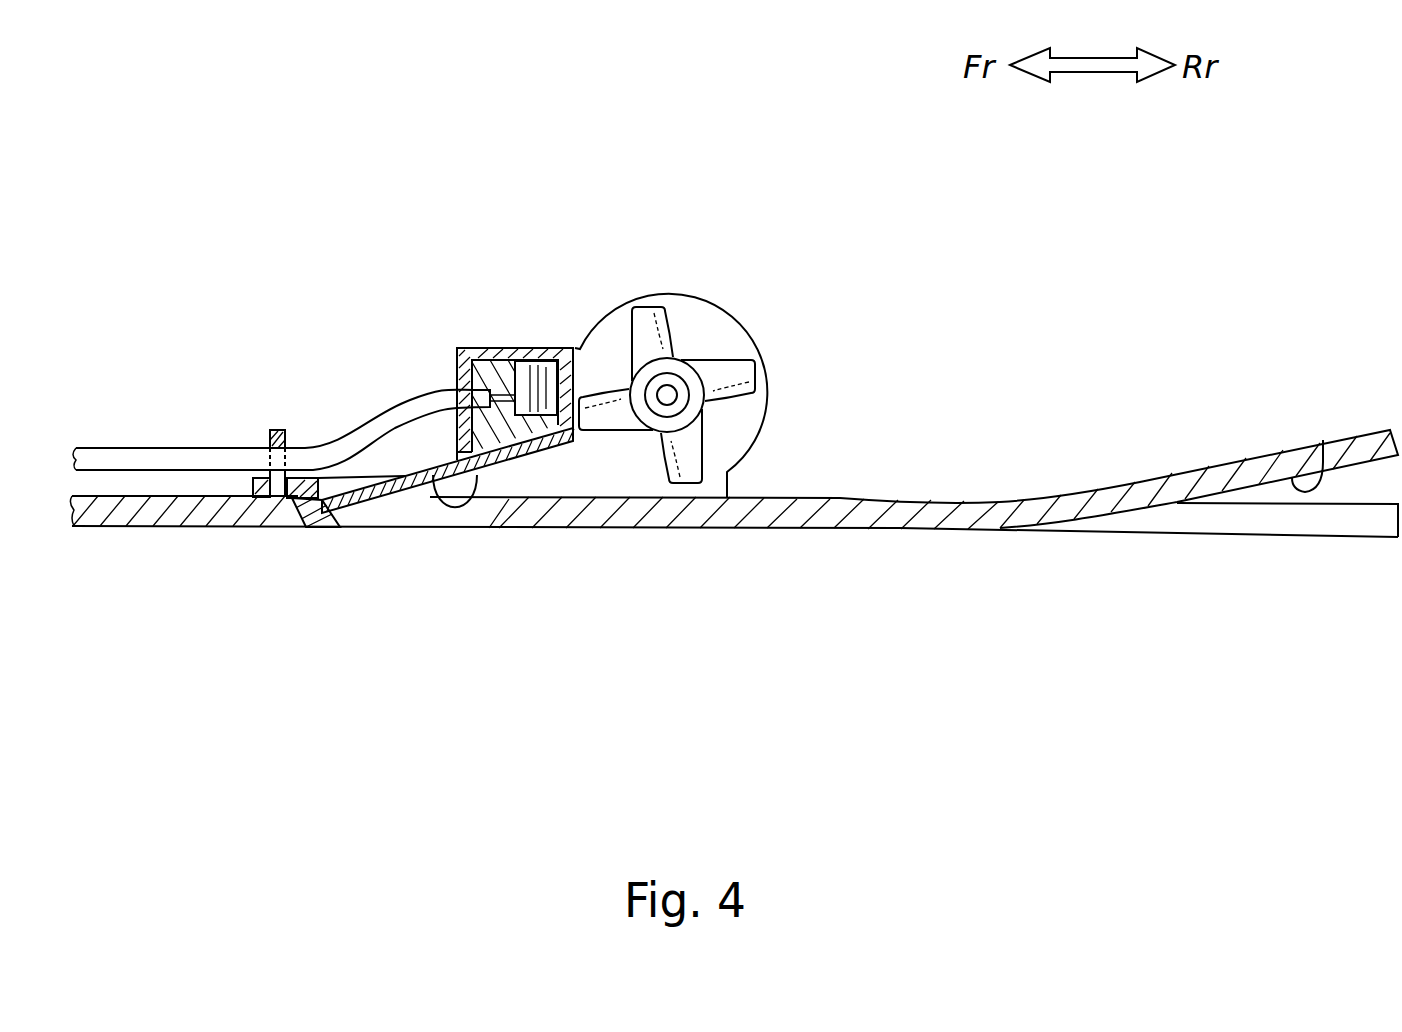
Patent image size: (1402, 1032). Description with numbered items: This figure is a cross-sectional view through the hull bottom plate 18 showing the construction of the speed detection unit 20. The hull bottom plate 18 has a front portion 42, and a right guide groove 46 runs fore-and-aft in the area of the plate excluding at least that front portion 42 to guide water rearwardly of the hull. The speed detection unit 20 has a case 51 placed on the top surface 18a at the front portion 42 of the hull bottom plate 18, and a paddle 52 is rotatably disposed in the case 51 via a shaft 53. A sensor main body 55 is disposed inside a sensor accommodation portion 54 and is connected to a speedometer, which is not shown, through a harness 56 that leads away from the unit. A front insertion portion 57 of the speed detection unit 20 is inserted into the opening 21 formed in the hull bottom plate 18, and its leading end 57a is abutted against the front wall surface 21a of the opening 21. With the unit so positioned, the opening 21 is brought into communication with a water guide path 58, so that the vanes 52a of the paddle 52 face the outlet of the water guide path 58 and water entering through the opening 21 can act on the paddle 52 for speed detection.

The hull bottom plate 18 is at (930, 538).
The top surface 18a is at (800, 497).
The speed detection unit 20 is at (707, 292).
The opening 21 is at (478, 527).
The front wall surface 21a is at (306, 526).
The front portion 42 is at (143, 526).
The right guide groove 46 is at (1323, 440).
The case 51 is at (739, 343).
The paddle 52 is at (638, 297).
The vanes 52a is at (752, 375).
The shaft 53 is at (667, 397).
The sensor accommodation portion 54 is at (453, 367).
The sensor main body 55 is at (533, 365).
The harness 56 is at (218, 455).
The front insertion portion 57 is at (373, 526).
The leading end 57a is at (332, 527).
The water guide path 58 is at (437, 478).